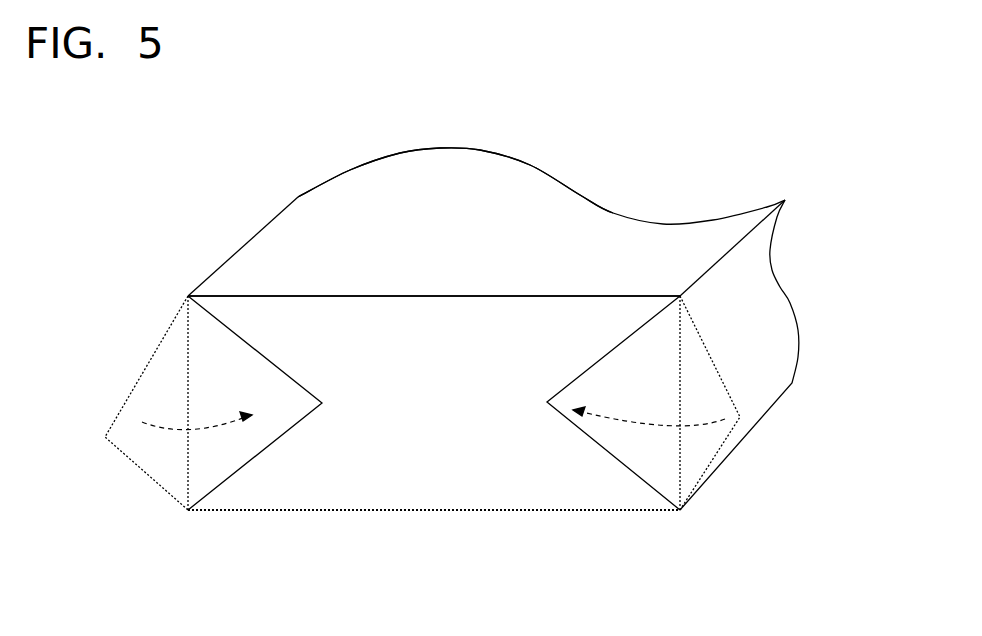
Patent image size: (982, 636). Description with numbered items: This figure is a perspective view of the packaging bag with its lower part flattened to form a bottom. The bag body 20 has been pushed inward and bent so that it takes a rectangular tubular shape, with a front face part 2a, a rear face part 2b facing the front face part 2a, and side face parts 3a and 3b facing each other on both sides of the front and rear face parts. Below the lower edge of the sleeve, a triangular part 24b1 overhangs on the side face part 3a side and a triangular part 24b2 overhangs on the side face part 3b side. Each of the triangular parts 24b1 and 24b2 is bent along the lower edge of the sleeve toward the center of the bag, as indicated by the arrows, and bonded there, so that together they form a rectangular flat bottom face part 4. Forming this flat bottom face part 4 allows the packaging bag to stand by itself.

The bag body 20 is at (587, 263).
The front face part 2a is at (470, 217).
The rear face part 2b is at (612, 512).
The side face part 3a is at (212, 278).
The side face part 3b is at (762, 303).
The bottom face part 4 is at (418, 485).
The triangular part 24b1 is at (145, 370).
The triangular part 24b2 is at (733, 393).